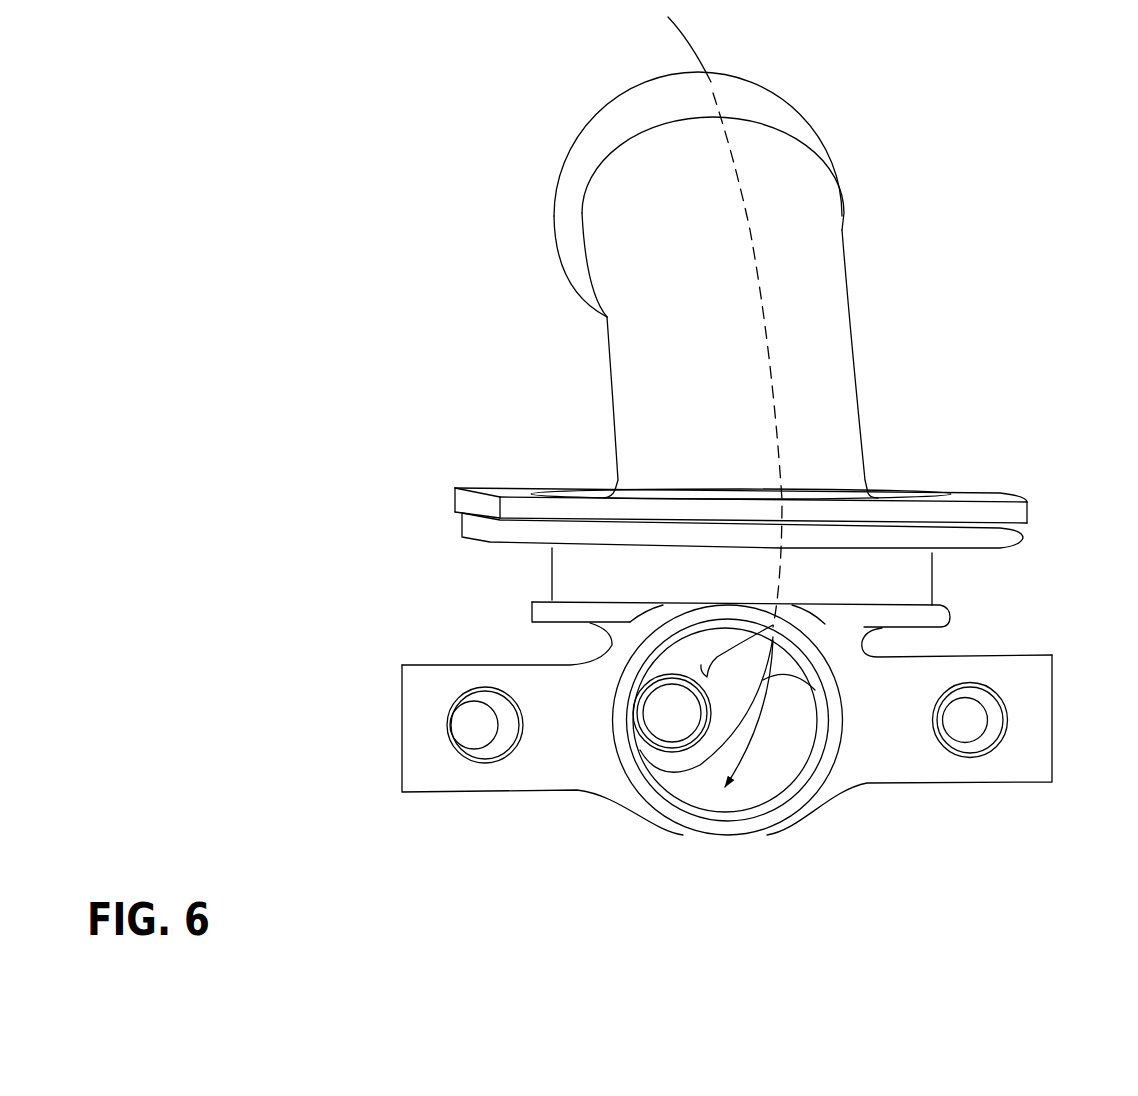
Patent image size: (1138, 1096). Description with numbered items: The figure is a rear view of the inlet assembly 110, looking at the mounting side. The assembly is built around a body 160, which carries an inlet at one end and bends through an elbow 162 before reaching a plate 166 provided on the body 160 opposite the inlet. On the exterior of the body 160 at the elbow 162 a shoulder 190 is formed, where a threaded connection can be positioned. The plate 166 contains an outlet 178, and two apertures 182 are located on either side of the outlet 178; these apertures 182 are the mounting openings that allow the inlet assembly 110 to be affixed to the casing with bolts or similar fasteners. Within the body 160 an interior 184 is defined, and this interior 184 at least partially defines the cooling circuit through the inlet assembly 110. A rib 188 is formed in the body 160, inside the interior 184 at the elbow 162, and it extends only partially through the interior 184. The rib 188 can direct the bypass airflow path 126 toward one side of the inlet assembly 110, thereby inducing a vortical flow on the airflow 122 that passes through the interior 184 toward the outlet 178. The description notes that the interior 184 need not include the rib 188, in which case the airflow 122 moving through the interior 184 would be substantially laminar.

The inlet assembly 110 is at (367, 96).
The airflow 122 is at (729, 134).
The bypass airflow path 126 is at (630, 203).
The body 160 is at (700, 412).
The elbow 162 is at (923, 578).
The plate 166 is at (1013, 670).
The outlet 178 is at (767, 810).
The apertures 182 is at (473, 718).
The interior 184 is at (690, 787).
The rib 188 is at (690, 650).
The shoulder 190 is at (535, 601).